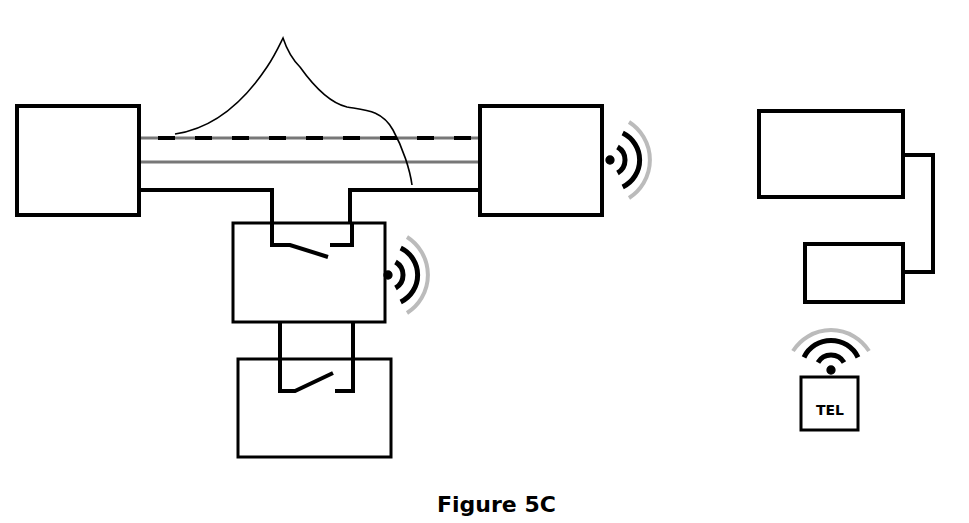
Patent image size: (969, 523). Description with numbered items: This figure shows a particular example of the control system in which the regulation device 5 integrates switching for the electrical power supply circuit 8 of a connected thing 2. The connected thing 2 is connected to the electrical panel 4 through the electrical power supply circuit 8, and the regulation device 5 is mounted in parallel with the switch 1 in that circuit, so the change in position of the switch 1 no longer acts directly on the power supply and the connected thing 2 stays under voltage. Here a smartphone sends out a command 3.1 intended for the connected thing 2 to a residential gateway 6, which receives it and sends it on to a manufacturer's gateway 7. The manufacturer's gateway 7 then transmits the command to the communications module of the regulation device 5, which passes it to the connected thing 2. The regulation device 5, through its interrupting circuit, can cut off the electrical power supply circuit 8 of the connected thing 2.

The switch 1 is at (314, 408).
The connected thing 2 is at (541, 160).
The command 3.1 is at (626, 250).
The electrical panel 4 is at (78, 160).
The regulation device 5 is at (309, 272).
The residential gateway 6 is at (854, 273).
The manufacturer's gateway 7 is at (831, 154).
The electrical power supply circuit 8 is at (283, 157).